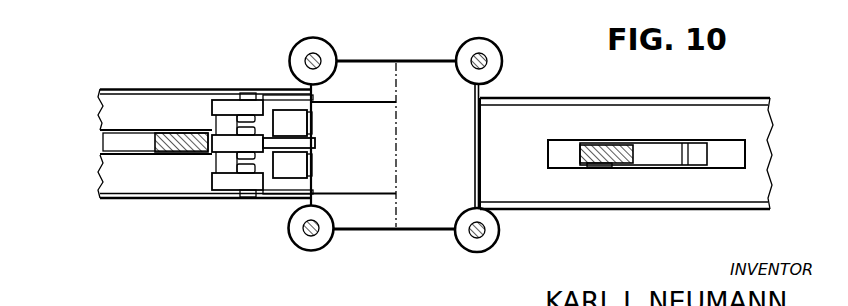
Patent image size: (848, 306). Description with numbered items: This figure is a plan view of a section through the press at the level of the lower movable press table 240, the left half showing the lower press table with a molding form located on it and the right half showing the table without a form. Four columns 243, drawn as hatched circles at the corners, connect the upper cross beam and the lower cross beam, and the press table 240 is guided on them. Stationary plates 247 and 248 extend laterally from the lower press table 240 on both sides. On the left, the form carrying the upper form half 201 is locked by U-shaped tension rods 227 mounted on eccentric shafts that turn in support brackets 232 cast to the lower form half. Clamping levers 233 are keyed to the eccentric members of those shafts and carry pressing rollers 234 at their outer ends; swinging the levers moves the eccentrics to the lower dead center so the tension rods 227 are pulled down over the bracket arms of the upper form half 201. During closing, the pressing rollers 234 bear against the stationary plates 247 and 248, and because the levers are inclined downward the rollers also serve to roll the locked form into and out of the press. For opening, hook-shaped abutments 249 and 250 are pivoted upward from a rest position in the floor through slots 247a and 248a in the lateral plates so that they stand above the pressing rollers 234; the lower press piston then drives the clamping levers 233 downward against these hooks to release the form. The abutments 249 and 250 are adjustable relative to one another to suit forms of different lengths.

The upper form half 201 is at (357, 113).
The tension rods 227 is at (297, 117).
The support brackets 232 is at (308, 104).
The clamping levers 233 is at (255, 167).
The pressing rollers 234 is at (210, 107).
The lower movable press table 240 is at (423, 66).
The columns 243 is at (311, 57).
The stationary plate 247 is at (132, 100).
The slot 247a is at (102, 132).
The stationary plate 248 is at (637, 193).
The slot 248a is at (728, 157).
The hook-shaped abutment 249 is at (150, 154).
The hook-shaped abutment 250 is at (590, 143).